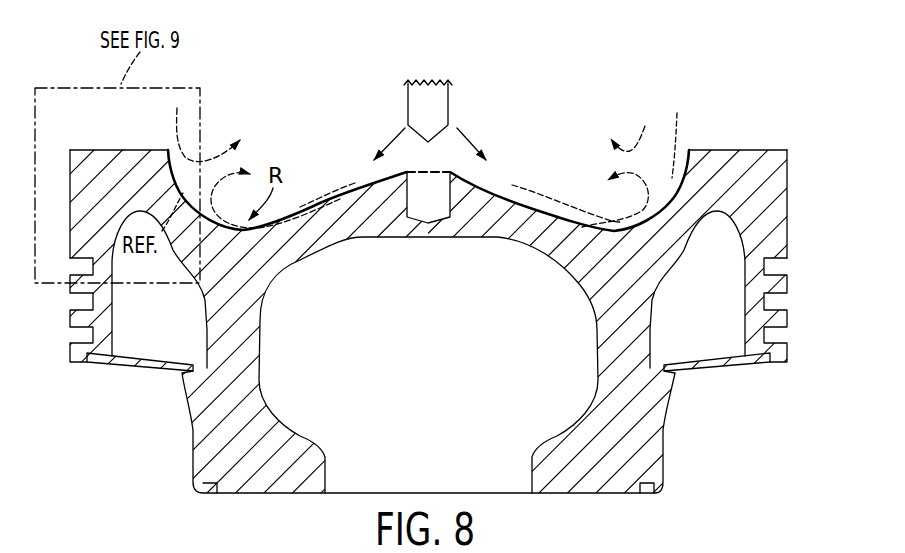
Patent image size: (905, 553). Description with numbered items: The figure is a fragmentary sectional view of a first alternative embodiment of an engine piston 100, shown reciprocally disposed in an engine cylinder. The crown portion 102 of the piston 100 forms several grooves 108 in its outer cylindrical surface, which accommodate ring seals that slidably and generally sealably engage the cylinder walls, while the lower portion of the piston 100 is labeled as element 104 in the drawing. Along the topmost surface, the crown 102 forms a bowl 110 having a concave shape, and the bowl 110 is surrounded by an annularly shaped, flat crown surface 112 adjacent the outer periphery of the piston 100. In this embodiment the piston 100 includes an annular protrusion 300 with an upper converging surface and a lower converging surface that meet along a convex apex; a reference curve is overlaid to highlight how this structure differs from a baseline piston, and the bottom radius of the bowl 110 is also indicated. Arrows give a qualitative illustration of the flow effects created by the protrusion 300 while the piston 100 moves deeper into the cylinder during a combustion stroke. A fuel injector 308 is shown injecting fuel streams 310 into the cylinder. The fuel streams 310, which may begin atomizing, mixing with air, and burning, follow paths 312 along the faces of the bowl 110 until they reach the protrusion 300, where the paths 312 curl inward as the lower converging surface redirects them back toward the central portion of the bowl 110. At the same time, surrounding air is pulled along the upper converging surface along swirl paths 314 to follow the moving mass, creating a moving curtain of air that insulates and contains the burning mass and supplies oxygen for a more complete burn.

The piston 100 is at (804, 71).
The crown portion 102 is at (780, 187).
The piston skirt 104 is at (657, 443).
The grooves 108 is at (790, 268).
The bowl 110 is at (534, 103).
The flat crown surface 112 is at (740, 149).
The annular protrusion 300 is at (670, 190).
The fuel injector 308 is at (442, 105).
The fuel streams 310 is at (458, 131).
The paths 312 is at (313, 197).
The swirl paths 314 is at (620, 164).